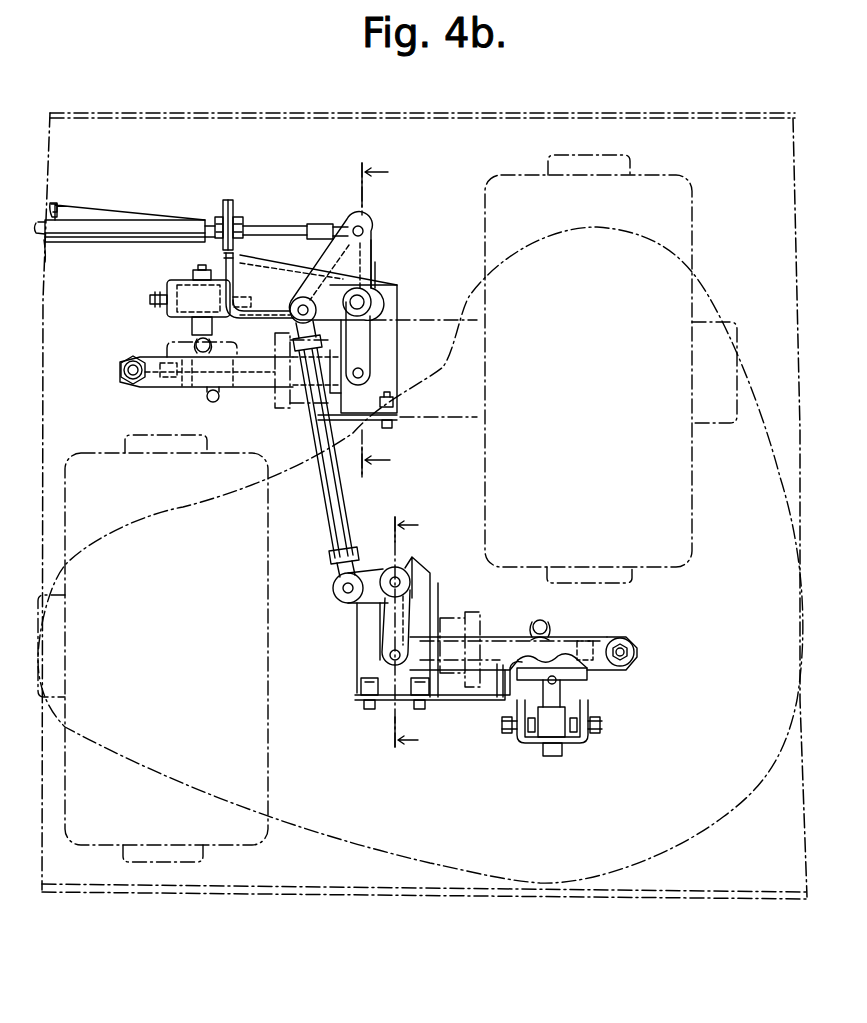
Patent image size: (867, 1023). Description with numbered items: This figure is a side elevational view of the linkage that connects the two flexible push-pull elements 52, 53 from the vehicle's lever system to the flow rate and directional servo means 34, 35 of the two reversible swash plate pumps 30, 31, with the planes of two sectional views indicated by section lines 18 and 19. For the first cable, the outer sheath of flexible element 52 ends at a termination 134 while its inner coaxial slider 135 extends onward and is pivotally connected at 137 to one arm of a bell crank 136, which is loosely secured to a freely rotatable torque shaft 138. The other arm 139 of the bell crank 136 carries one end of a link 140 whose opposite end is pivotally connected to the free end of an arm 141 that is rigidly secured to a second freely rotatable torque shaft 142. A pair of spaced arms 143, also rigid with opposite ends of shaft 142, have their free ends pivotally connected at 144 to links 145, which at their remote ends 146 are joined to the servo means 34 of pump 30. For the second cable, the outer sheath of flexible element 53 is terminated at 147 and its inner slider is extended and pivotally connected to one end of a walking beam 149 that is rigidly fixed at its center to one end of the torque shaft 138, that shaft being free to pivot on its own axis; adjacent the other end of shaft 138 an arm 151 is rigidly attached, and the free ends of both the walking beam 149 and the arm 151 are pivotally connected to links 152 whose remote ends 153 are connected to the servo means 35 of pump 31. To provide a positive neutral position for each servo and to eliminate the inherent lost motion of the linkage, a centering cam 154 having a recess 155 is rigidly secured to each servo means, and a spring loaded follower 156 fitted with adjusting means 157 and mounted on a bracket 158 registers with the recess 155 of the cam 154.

The section line 18- 18 is at (388, 320).
The section line 19- 19 is at (422, 632).
The swash plate pump 30 is at (262, 772).
The swash plate pump 31 is at (497, 198).
The servo means 34 is at (624, 688).
The servo means 35 is at (137, 352).
The flexible push-pull element 52 is at (85, 233).
The flexible push-pull element 53 is at (80, 212).
The termination 134 is at (248, 200).
The inner coaxial slider 135 is at (45, 242).
The bell crank 136 is at (371, 264).
The pivot connection 137 is at (370, 228).
The torque shaft 138 is at (359, 302).
The bell crank arm 139 is at (290, 318).
The link 140 is at (340, 500).
The arm 141 is at (363, 568).
The torque shaft 142 is at (400, 578).
The spaced arms 143 is at (390, 615).
The pivot connection 144 is at (390, 656).
The link 145 is at (496, 672).
The remote end 146 is at (631, 651).
The termination 147 is at (54, 204).
The walking beam 149 is at (374, 273).
The arm 151 is at (363, 342).
The link 152 is at (246, 390).
The remote end 153 is at (121, 384).
The centering cam 154 is at (168, 348).
The recess 155 is at (203, 345).
The spring loaded follower 156 is at (566, 692).
The adjusting means 157 is at (597, 732).
The bracket 158 is at (577, 746).